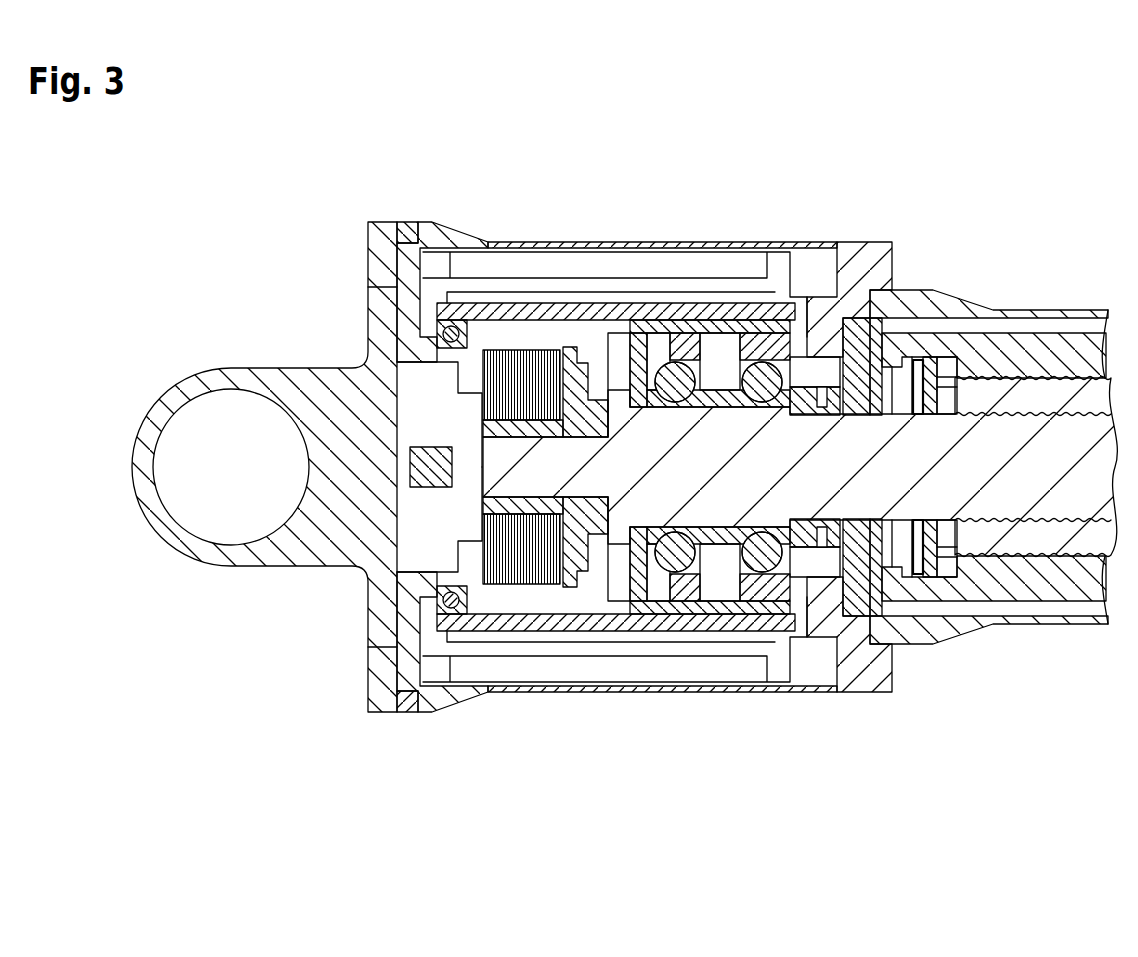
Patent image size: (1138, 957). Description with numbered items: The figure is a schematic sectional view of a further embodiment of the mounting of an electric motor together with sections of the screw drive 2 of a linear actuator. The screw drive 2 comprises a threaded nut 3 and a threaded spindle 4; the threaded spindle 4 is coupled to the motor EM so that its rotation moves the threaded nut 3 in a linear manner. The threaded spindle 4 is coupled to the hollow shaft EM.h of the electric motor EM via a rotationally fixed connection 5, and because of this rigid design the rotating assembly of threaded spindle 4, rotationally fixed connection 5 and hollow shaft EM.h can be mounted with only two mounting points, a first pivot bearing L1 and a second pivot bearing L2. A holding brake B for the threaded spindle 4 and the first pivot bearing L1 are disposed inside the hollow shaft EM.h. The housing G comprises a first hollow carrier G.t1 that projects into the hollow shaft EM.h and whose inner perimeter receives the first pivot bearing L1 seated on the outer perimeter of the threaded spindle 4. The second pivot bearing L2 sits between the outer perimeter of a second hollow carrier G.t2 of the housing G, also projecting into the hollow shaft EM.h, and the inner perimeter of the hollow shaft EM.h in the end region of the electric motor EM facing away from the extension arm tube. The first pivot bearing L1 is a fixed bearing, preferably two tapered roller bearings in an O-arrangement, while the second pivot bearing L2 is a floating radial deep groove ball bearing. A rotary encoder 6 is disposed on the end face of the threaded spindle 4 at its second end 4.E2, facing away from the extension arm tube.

The screw drive 2 is at (1057, 296).
The threaded nut 3 is at (968, 352).
The threaded spindle 4 is at (1052, 452).
The second end of the threaded spindle 4.E2 is at (455, 498).
The rotationally fixed connection 5 is at (622, 368).
The rotary encoder 6 is at (425, 465).
The holding brake B is at (525, 507).
The motor EM is at (706, 218).
The hollow shaft EM.h is at (682, 627).
The housing G is at (1020, 317).
The first hollow carrier G.t1 is at (750, 348).
The second hollow carrier G.t2 is at (405, 600).
The first pivot bearing L1 is at (720, 368).
The second pivot bearing L2 is at (437, 336).